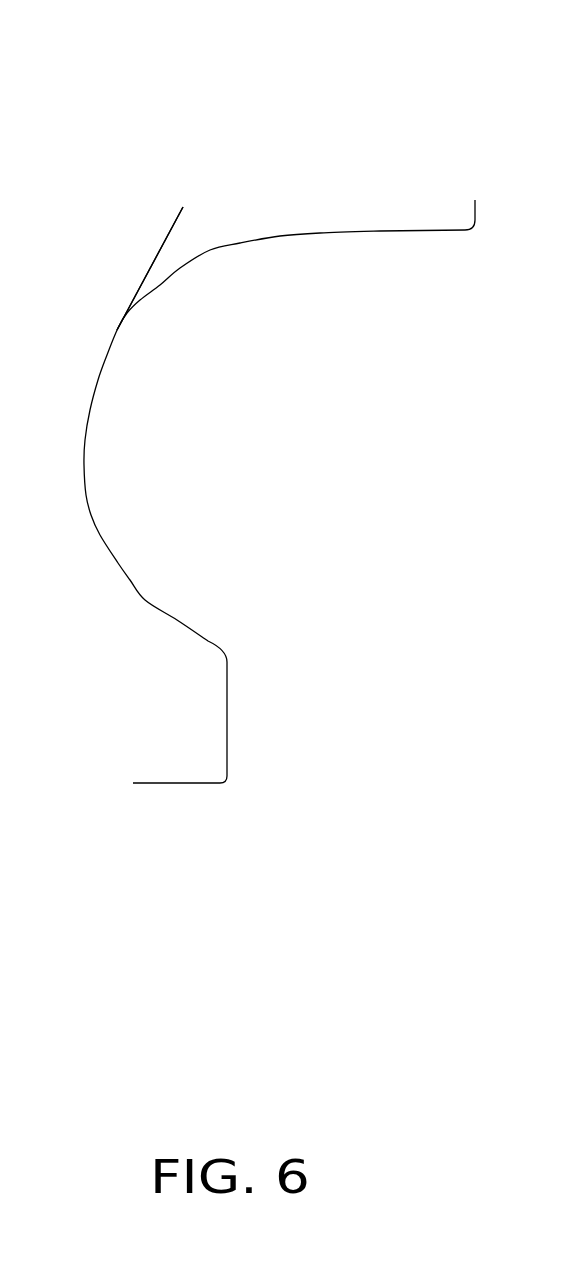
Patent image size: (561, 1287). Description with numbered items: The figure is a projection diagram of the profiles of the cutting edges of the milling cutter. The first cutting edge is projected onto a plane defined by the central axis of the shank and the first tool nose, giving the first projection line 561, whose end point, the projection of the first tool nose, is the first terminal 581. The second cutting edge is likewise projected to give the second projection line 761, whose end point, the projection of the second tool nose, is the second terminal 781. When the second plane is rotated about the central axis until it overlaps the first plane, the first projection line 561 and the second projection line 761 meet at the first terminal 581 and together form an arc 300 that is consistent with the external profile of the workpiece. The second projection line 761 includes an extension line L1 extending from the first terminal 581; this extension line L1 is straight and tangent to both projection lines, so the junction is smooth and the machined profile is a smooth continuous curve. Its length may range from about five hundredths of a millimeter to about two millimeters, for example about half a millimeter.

The arc 300 is at (259, 72).
The first projection line 561 is at (393, 230).
The first terminal 581 is at (117, 332).
The second projection line 761 is at (145, 600).
The second terminal 781 is at (183, 207).
The extension line L1 is at (152, 262).